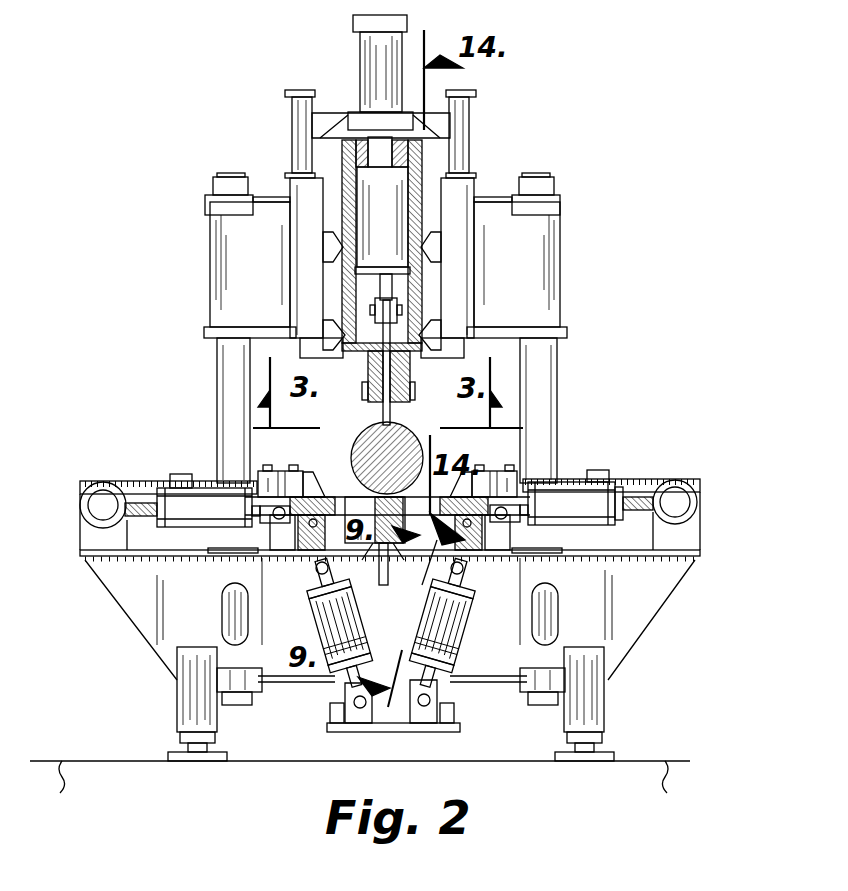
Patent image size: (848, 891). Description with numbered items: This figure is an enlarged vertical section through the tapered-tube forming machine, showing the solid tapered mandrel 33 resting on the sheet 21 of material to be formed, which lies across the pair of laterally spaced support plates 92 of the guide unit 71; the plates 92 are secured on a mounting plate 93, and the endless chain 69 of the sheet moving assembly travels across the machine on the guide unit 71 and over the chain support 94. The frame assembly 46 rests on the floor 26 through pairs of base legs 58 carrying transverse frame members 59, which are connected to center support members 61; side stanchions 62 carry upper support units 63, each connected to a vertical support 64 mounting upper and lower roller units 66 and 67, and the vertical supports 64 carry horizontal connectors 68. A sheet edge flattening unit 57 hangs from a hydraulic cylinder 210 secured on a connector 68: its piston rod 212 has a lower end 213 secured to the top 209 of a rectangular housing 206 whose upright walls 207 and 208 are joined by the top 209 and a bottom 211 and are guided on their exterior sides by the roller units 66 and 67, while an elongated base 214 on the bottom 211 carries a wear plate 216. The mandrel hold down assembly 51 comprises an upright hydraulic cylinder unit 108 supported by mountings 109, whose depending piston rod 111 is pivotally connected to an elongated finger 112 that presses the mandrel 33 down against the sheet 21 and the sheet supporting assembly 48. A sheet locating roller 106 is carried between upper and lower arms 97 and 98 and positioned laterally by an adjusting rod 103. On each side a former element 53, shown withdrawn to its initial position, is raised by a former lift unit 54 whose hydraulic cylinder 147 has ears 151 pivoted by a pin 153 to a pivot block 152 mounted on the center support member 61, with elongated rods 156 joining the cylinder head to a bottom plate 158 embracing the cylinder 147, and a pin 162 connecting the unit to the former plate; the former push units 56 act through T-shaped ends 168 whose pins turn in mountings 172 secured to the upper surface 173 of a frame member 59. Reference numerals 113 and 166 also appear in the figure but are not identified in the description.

The hydraulic cylinder 210 is at (398, 52).
The horizontal connector 68 is at (331, 117).
The vertical support 64 is at (283, 148).
The upright wall 208 is at (452, 198).
The rectangular housing 206 is at (336, 187).
The upright hydraulic cylinder unit 108 is at (416, 206).
The upright wall 207 is at (343, 226).
The elongated base 214 is at (423, 346).
The bottom 211 is at (345, 349).
The piston rod 212 is at (388, 148).
The lower end 213 is at (402, 150).
The top 209 is at (395, 195).
The mounting 109 is at (410, 270).
The piston rod 111 is at (380, 290).
The elongated finger 112 is at (397, 310).
The mandrel hold down assembly 51 is at (390, 322).
The wear plate 216 is at (364, 397).
The sheet edge flattening unit 57 is at (362, 404).
The mandrel 33 is at (403, 438).
The ball neck 113 is at (388, 423).
The roller unit 66 is at (322, 247).
The roller unit 67 is at (323, 335).
The upper support unit 63 is at (222, 296).
The frame assembly 46 is at (190, 246).
The side stanchion 62 is at (217, 398).
The upper arm 97 is at (267, 465).
The roller 106 is at (293, 466).
The sheet 21 is at (307, 490).
The endless chain 69 is at (455, 482).
The support plate 92 is at (365, 502).
The guide unit 71 is at (368, 500).
The lower arm 98 is at (258, 476).
The mounting 172 is at (700, 527).
The upper surface 173 is at (700, 551).
The T-shaped end 168 is at (103, 482).
The adjusting rod 103 is at (210, 488).
The former push unit 56 is at (165, 468).
The clevis 166 is at (222, 528).
The transverse frame member 59 is at (157, 640).
The base leg 58 is at (188, 699).
The floor 26 is at (115, 761).
The former lift unit 54 is at (308, 635).
The former element 53 is at (316, 568).
The pin 162 is at (318, 578).
The hydraulic cylinder 147 is at (318, 622).
The elongated rod 156 is at (348, 622).
The bottom plate 158 is at (447, 655).
The ear 151 is at (345, 697).
The pin 153 is at (352, 708).
The center support member 61 is at (333, 725).
The pivot block 152 is at (358, 733).
The sheet supporting assembly 48 is at (389, 588).
The mounting plate 93 is at (382, 572).
The chain support 94 is at (387, 560).